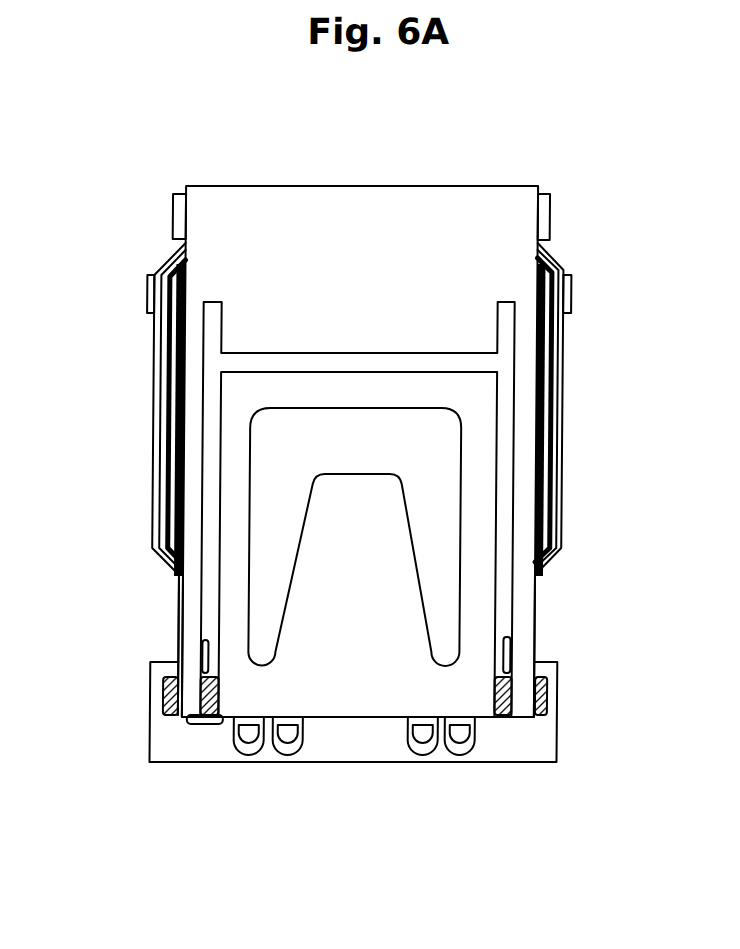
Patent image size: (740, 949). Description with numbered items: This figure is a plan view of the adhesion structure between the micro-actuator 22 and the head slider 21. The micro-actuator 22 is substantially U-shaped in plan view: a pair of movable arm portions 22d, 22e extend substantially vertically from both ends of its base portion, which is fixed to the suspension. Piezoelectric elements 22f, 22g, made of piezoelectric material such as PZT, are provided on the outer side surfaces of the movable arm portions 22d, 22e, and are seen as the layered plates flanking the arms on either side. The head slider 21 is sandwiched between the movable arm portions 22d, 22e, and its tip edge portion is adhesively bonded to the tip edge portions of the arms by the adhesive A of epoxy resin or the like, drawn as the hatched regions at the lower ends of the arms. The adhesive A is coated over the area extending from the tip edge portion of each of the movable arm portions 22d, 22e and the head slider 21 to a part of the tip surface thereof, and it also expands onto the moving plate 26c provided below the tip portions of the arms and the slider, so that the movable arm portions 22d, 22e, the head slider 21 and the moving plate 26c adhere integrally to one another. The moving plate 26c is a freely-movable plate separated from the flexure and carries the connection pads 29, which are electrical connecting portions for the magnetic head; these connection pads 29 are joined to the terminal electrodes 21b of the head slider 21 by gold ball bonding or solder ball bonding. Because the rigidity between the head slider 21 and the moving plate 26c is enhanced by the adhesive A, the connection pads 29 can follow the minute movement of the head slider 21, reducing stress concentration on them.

The micro-actuator 22 is at (478, 172).
The piezoelectric element 22g is at (153, 374).
The piezoelectric element 22f is at (564, 380).
The movable arm portion 22e is at (182, 624).
The movable arm portion 22d is at (537, 612).
The head slider 21 is at (212, 497).
The terminal electrodes 21b is at (251, 717).
The connection pads 29 is at (290, 752).
The moving plate 26c is at (545, 718).
The adhesive A is at (165, 695).